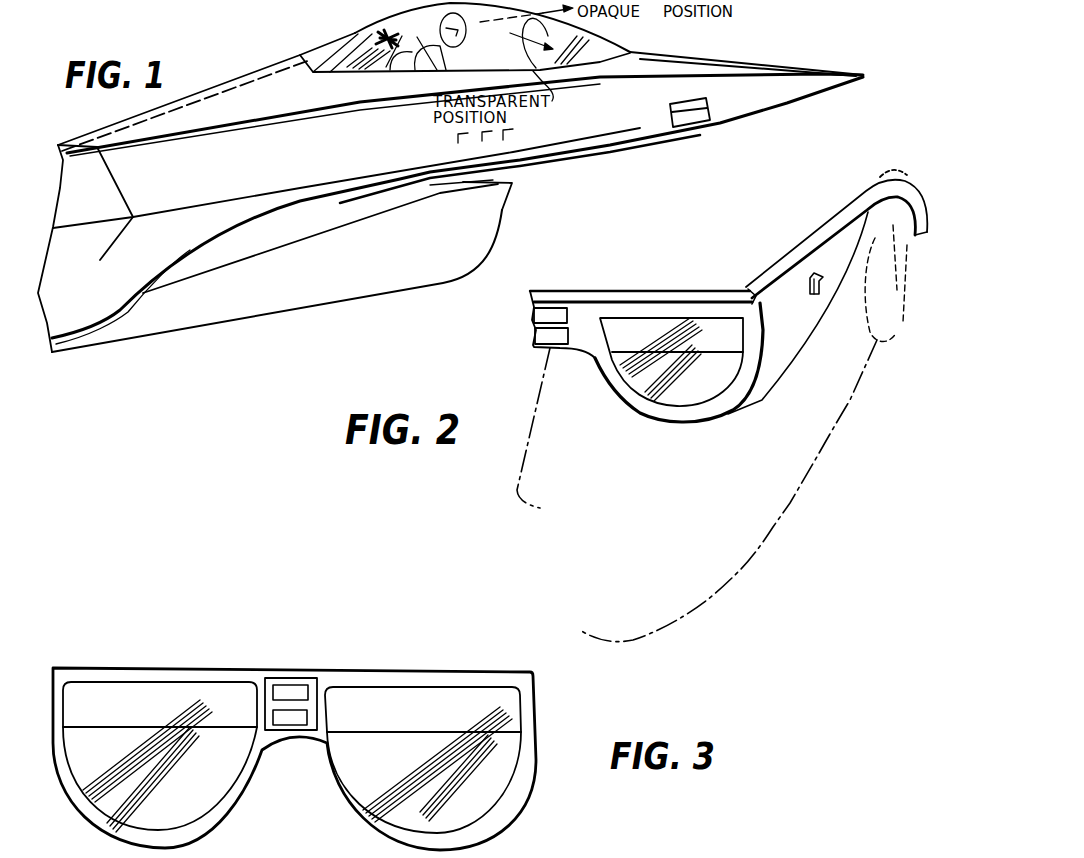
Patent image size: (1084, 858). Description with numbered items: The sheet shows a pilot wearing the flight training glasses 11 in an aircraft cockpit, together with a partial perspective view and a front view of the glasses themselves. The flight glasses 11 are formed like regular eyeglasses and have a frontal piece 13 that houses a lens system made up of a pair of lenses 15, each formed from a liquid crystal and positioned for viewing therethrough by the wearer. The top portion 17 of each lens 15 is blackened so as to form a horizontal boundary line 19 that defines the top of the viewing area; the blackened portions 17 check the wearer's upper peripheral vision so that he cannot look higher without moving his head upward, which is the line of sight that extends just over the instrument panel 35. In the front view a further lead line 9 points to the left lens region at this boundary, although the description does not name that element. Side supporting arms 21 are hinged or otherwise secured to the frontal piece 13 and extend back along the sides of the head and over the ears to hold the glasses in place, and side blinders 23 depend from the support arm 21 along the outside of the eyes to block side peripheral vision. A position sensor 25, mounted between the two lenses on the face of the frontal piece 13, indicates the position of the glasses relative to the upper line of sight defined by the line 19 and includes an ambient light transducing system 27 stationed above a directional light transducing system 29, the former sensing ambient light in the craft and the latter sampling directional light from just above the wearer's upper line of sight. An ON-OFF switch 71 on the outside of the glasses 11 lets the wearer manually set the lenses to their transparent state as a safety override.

In FIG. 3, the left lens dividing line 9 is at (83, 728).
In FIG. 1, the flight glasses 11 is at (458, 30).
In FIG. 2, the flight glasses 11 is at (652, 432).
In FIG. 2, the frontal piece 13 is at (700, 413).
In FIG. 3, the frontal piece 13 is at (184, 671).
In FIG. 3, the lenses 15 is at (97, 800).
In FIG. 3, the top portion 17 is at (112, 693).
In FIG. 3, the horizontal boundary line 19 is at (508, 733).
In FIG. 2, the side supporting arms 21 is at (757, 292).
In FIG. 2, the side blinders 23 is at (784, 366).
In FIG. 3, the position sensor 25 is at (278, 678).
In FIG. 3, the ambient light transducing system 27 is at (300, 690).
In FIG. 3, the directional light transducing system 29 is at (293, 718).
In FIG. 1, the instrument panel 35 is at (578, 43).
In FIG. 2, the ON-OFF switch 71 is at (816, 276).